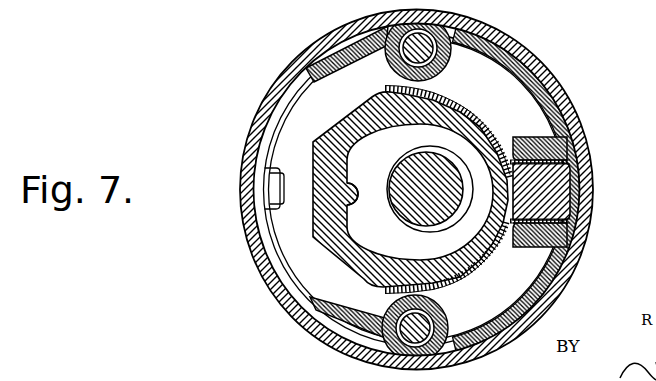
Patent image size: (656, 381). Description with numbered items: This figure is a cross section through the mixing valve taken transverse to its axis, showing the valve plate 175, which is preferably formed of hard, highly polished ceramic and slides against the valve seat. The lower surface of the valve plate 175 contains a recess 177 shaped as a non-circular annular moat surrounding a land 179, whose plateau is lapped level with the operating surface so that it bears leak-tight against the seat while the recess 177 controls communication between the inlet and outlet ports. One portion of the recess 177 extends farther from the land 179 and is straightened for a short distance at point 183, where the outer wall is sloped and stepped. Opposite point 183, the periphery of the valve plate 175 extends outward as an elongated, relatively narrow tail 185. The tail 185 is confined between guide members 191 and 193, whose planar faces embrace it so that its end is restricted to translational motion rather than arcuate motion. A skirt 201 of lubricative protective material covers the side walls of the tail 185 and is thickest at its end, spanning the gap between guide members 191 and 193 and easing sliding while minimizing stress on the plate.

The valve plate 175 is at (330, 122).
The recess 177 is at (460, 147).
The land 179 is at (413, 206).
The straightened portion of recess periphery 183 is at (350, 192).
The tail 185 is at (553, 201).
The guide member 191 is at (565, 150).
The guide member 193 is at (573, 237).
The skirt 201 is at (575, 180).